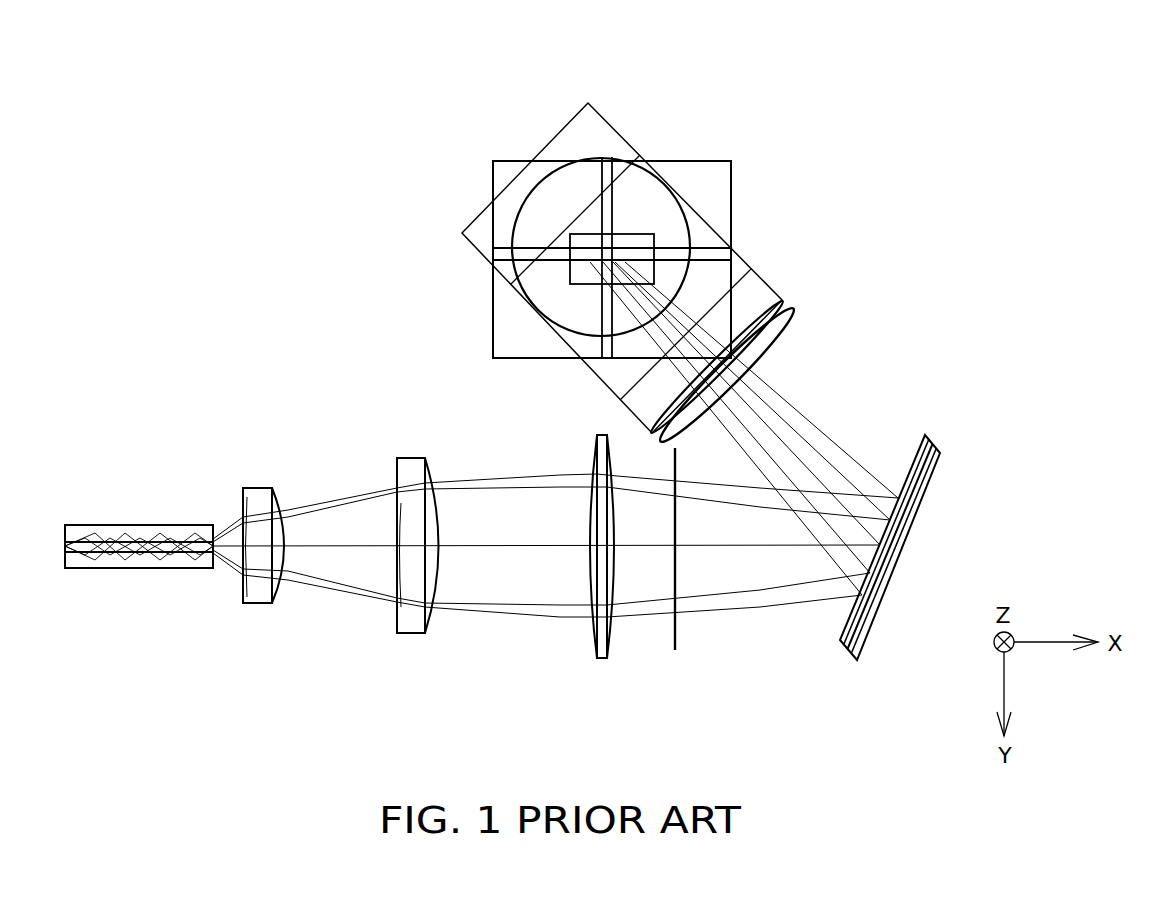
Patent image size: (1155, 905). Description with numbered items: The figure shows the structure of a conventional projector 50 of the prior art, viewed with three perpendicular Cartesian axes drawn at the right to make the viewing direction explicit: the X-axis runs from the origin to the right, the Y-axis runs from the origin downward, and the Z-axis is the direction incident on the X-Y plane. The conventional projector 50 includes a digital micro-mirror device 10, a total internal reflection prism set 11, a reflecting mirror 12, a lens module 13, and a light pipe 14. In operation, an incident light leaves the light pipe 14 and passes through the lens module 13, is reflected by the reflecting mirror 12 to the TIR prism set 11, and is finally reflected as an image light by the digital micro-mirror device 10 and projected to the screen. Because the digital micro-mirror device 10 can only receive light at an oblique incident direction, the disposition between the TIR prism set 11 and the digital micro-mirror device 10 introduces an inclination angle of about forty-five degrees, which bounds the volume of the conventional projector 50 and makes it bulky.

The conventional projector 50 is at (243, 107).
The digital micro-mirror device 10 is at (642, 235).
The total internal reflection (TIR) prism set 11 is at (717, 307).
The reflecting mirror 12 is at (900, 562).
The lens module 13 is at (235, 655).
The light pipe 14 is at (142, 523).